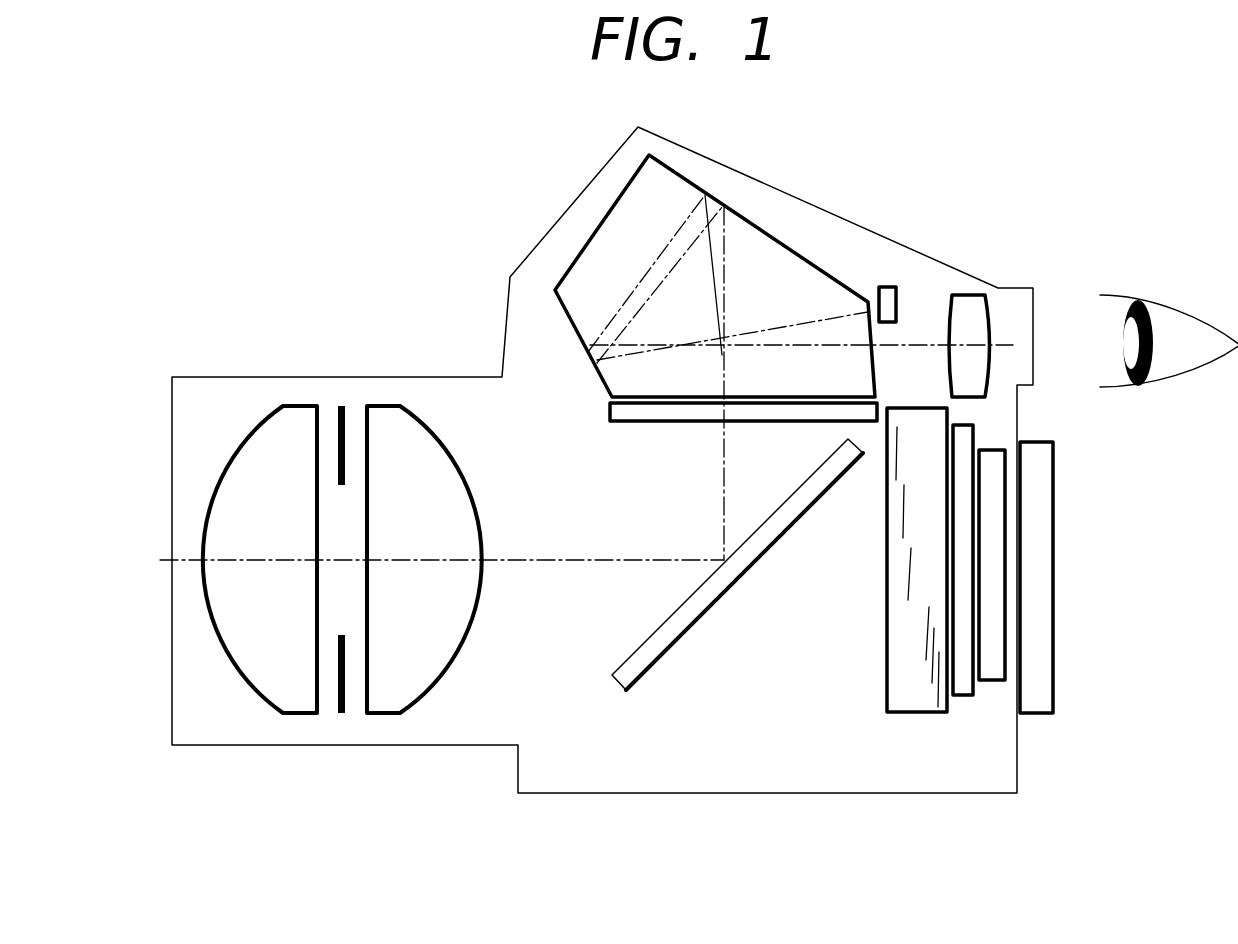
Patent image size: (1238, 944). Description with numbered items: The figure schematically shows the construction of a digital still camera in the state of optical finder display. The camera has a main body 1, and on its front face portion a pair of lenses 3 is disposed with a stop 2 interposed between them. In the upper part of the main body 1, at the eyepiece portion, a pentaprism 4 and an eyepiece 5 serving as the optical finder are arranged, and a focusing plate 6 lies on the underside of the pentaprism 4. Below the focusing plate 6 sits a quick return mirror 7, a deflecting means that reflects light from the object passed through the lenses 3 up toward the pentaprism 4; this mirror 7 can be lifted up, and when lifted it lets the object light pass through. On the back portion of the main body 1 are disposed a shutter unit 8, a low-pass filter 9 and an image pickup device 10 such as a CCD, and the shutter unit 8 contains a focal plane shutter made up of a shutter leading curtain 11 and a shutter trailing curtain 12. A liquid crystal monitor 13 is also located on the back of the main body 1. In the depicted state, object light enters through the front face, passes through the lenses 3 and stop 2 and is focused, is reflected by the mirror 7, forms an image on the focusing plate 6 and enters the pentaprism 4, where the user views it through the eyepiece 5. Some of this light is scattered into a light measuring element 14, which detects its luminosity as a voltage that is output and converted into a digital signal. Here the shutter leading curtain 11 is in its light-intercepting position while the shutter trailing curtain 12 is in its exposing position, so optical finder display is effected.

The main body 1 is at (231, 377).
The stop 2 is at (344, 702).
The lenses 3 is at (382, 405).
The pentaprism 4 is at (765, 250).
The eyepiece 5 is at (968, 295).
The focusing plate 6 is at (637, 423).
The quick return mirror 7 is at (647, 660).
The shutter unit 8 is at (914, 713).
The low-pass filter 9 is at (967, 697).
The image pickup device 10 is at (1000, 682).
The shutter leading curtain 11 is at (897, 497).
The shutter trailing curtain 12 is at (929, 630).
The liquid crystal monitor 13 is at (1040, 527).
The light measuring element 14 is at (885, 287).